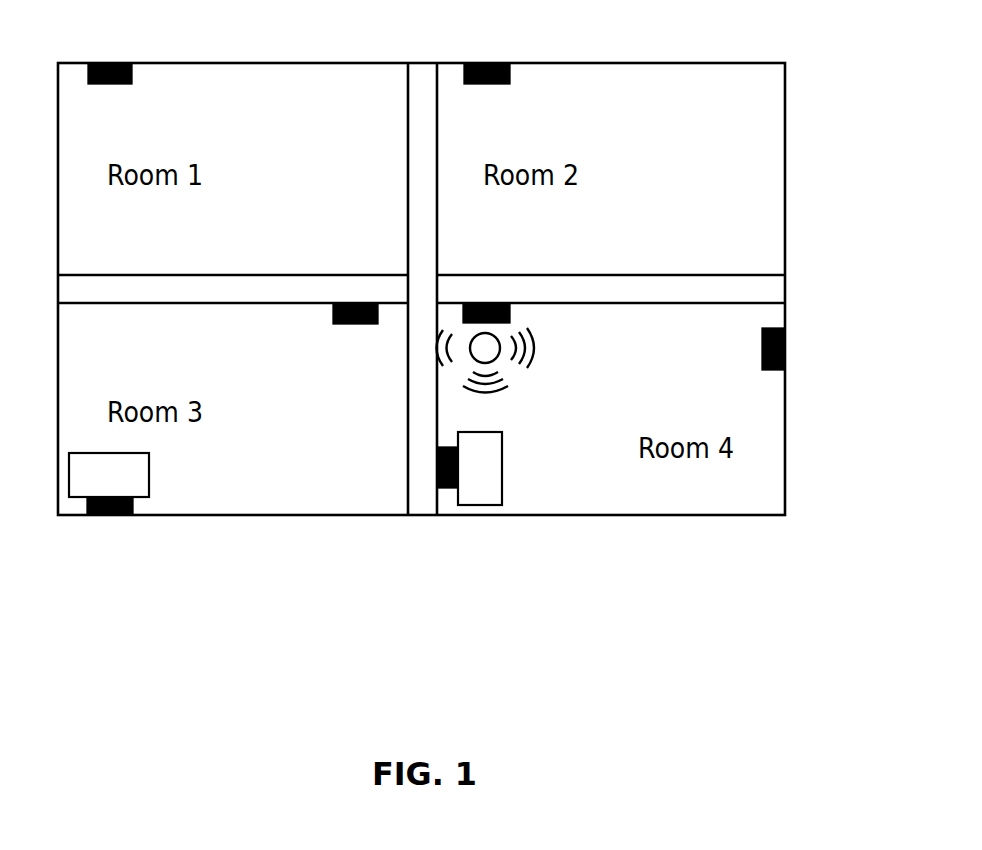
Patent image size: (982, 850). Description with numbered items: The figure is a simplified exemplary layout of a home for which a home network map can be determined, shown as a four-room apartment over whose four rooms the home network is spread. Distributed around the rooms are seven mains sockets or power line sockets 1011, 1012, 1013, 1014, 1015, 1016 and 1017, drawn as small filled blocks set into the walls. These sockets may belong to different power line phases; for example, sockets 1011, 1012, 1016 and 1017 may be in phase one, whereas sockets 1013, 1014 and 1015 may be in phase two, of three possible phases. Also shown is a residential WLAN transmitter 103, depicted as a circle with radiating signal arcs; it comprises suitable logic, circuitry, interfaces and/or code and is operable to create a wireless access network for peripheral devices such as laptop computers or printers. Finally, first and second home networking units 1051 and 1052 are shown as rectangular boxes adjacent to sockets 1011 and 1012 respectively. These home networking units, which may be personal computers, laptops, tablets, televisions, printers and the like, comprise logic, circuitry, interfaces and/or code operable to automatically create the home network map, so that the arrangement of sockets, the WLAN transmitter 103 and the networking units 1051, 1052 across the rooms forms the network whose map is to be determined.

The mains socket 1011 is at (444, 447).
The mains socket 1012 is at (118, 516).
The mains socket 1013 is at (360, 325).
The mains socket 1014 is at (136, 72).
The mains socket 1015 is at (478, 63).
The mains socket 1016 is at (787, 341).
The mains socket 1017 is at (510, 308).
The residential WLAN transmitter 103 is at (500, 346).
The first home networking unit 1051 is at (493, 472).
The second home networking unit 1052 is at (142, 468).